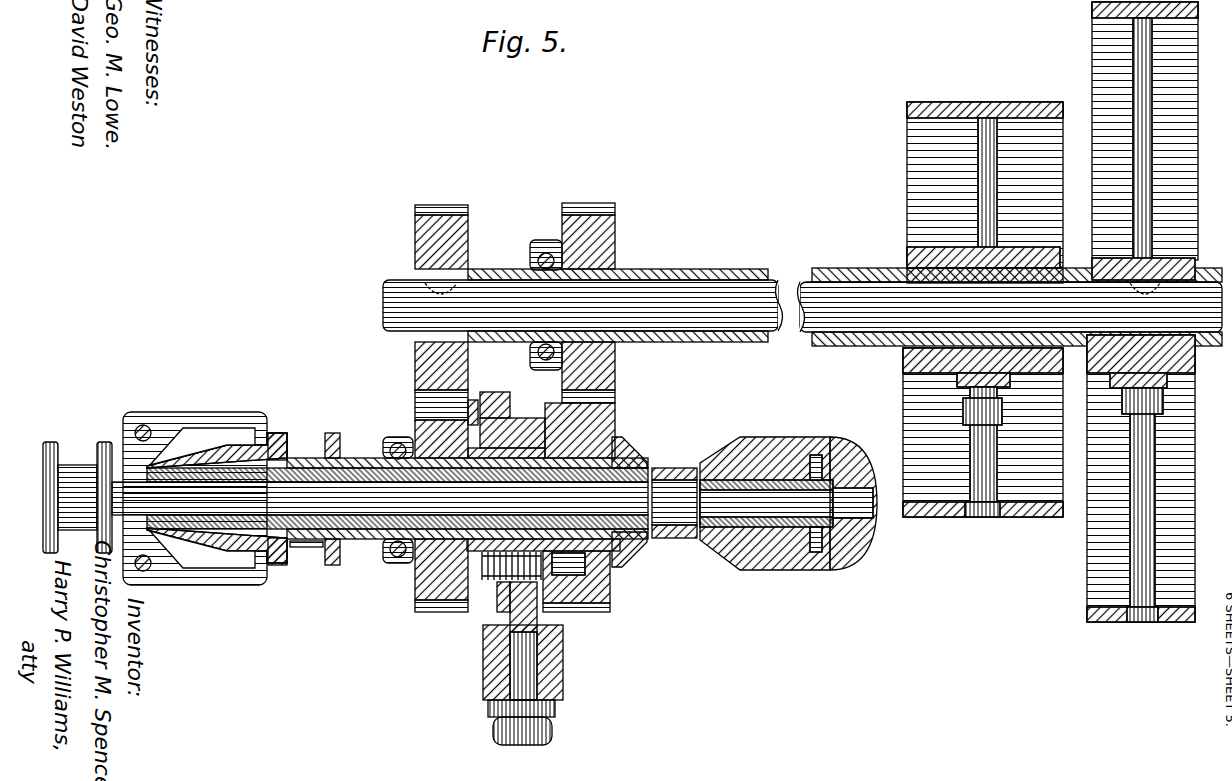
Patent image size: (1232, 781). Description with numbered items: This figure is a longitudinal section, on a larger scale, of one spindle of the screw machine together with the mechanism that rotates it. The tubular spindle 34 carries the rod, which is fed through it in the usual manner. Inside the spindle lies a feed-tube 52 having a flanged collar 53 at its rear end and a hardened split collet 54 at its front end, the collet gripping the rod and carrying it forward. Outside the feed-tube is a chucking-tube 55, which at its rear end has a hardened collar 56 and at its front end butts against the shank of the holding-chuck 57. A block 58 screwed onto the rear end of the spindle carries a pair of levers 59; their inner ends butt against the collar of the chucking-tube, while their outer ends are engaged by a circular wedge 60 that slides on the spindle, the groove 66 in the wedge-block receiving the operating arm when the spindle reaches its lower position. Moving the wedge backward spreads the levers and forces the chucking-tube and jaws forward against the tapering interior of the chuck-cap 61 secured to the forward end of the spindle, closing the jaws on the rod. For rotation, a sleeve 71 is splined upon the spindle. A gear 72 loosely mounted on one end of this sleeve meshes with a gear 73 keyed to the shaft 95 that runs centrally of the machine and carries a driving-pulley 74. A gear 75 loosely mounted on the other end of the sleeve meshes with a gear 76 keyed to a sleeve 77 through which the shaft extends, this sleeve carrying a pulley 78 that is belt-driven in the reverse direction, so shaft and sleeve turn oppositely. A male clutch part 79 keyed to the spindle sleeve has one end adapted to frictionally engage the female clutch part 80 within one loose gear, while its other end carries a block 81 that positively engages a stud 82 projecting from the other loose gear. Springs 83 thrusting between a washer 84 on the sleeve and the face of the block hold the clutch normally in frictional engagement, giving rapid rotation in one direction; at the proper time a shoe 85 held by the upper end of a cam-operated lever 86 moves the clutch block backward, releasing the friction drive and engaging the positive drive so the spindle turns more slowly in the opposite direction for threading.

The tubular spindle 34 is at (372, 538).
The feed-tube 52 is at (372, 458).
The flanged collar 53 is at (84, 464).
The split collet 54 is at (716, 469).
The chucking-tube 55 is at (341, 458).
The hardened collar 56 is at (176, 460).
The holding-chuck 57 is at (860, 456).
The block 58 is at (224, 452).
The levers 59 is at (150, 412).
The circular wedge 60 is at (278, 434).
The chuck-cap 61 is at (819, 438).
The groove 66 is at (307, 550).
The sleeve 71 is at (642, 548).
The gear 72 is at (424, 614).
The gear 73 is at (415, 234).
The driving-pulley 74 is at (1090, 582).
The gear 75 is at (610, 607).
The gear 76 is at (615, 234).
The sleeve 77 is at (740, 342).
The pulley 78 is at (956, 518).
The male clutch part 79 is at (615, 412).
The female clutch part 80 is at (615, 392).
The block 81 is at (490, 420).
The stud 82 is at (476, 398).
The springs 83 is at (490, 592).
The washer 84 is at (477, 584).
The shoe 85 is at (537, 610).
The lever 86 is at (483, 692).
The shaft 95 is at (775, 288).